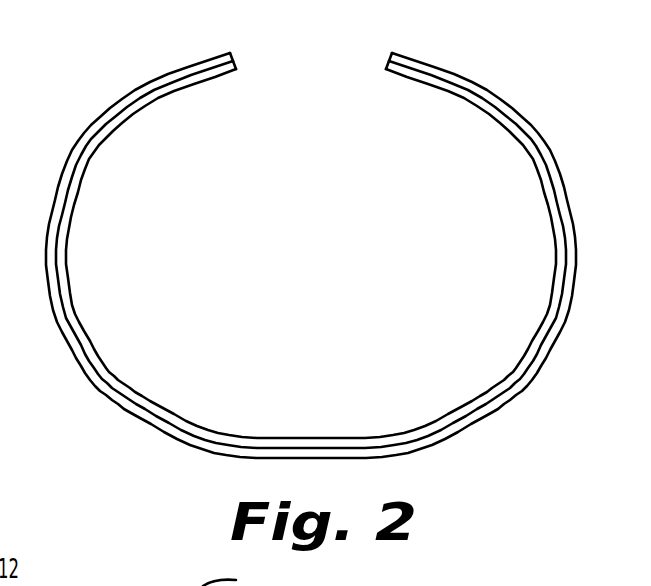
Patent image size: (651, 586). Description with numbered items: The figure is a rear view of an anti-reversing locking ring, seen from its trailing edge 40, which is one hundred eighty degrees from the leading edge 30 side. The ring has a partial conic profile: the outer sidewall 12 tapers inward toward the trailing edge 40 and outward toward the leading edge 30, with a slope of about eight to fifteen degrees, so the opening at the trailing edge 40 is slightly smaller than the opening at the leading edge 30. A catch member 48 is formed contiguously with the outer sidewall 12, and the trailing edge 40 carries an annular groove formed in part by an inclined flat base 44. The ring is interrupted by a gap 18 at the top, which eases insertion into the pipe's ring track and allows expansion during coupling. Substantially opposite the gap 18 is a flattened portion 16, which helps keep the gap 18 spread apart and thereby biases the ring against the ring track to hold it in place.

The outer sidewall 12 is at (428, 68).
The gap 18 is at (324, 55).
The catch member 48 is at (517, 123).
The inclined flat base 44 is at (493, 120).
The leading edge 30 is at (552, 268).
The trailing edge 40 is at (570, 297).
The flattened portion 16 is at (350, 425).